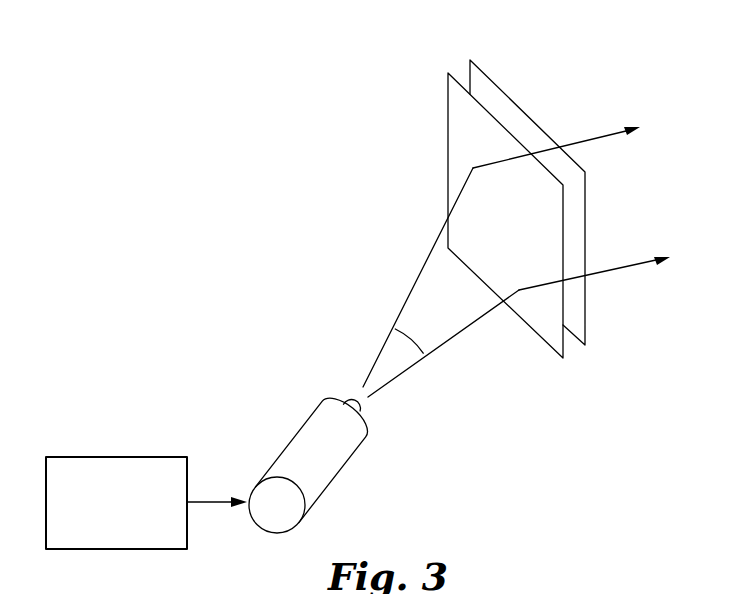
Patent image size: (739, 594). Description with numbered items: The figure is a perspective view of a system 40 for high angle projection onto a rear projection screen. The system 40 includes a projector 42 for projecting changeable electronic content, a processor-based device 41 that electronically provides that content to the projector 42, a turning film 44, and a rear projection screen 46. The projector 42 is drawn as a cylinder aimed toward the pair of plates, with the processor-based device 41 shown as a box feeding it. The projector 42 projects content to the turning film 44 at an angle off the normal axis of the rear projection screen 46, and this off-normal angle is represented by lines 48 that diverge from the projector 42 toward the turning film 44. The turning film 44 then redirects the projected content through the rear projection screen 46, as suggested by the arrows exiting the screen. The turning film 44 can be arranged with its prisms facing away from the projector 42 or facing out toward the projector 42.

The system 40 is at (328, 193).
The processor-based device 41 is at (118, 457).
The projector 42 is at (337, 467).
The turning film 44 is at (457, 103).
The rear projection screen 46 is at (492, 92).
The lines 48 is at (393, 326).